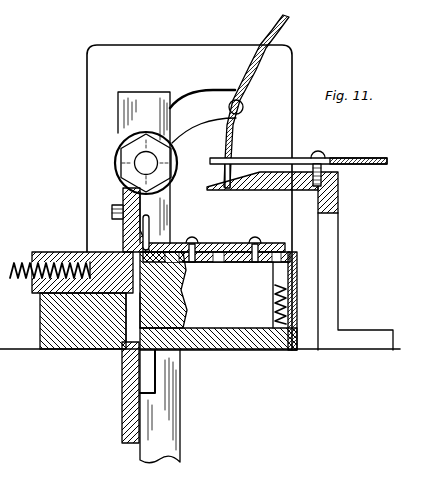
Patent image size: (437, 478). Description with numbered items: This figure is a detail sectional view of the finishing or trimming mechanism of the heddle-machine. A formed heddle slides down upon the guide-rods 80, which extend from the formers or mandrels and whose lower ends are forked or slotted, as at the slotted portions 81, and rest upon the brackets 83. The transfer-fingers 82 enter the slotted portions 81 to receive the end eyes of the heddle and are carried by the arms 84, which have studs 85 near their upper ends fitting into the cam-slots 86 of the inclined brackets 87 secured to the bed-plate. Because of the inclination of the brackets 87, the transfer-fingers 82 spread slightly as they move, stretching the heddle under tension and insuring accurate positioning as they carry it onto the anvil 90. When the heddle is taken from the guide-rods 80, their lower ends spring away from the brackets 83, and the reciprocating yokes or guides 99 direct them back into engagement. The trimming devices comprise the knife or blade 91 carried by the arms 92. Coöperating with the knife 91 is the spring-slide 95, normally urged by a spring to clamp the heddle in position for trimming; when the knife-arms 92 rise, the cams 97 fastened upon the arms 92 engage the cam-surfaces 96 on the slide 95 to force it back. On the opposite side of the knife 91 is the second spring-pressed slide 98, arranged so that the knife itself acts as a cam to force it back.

The guide-rods 80 is at (279, 28).
The forked or slotted portions 81 is at (234, 161).
The transfer-fingers 82 is at (150, 236).
The brackets 83 is at (328, 238).
The arms 84 is at (160, 421).
The studs 85 is at (143, 163).
The cam-slots 86 is at (189, 106).
The inclined brackets 87 is at (152, 58).
The anvil 90 is at (176, 268).
The knife or blade 91 is at (124, 235).
The arms 92 is at (128, 396).
The spring-slide 95 is at (226, 246).
The cam-surfaces 96 is at (166, 315).
The cams 97 is at (150, 370).
The second spring-pressed slide 98 is at (72, 247).
The reciprocating yokes or guides 99 is at (368, 159).